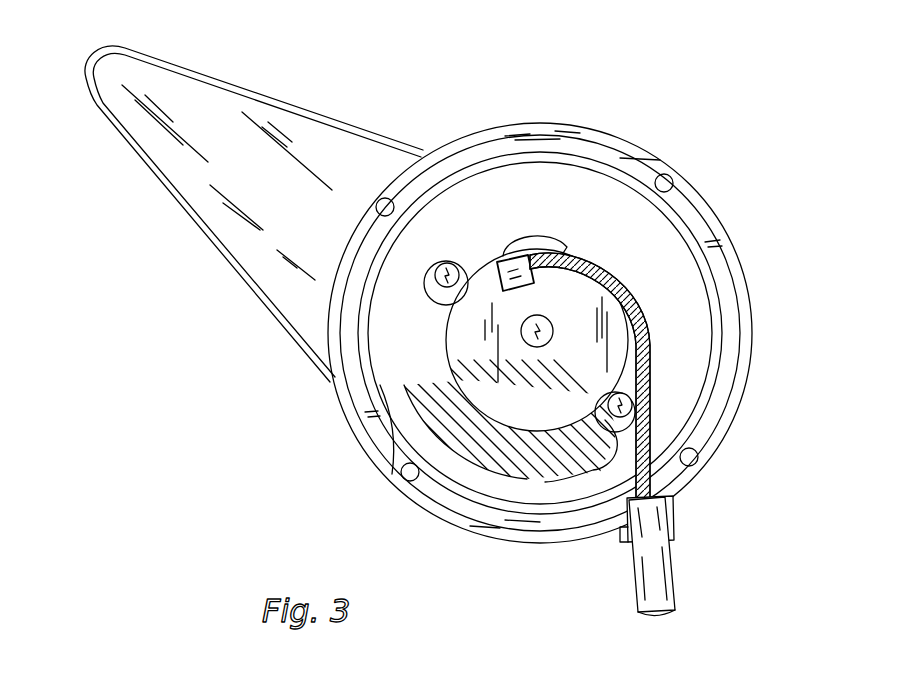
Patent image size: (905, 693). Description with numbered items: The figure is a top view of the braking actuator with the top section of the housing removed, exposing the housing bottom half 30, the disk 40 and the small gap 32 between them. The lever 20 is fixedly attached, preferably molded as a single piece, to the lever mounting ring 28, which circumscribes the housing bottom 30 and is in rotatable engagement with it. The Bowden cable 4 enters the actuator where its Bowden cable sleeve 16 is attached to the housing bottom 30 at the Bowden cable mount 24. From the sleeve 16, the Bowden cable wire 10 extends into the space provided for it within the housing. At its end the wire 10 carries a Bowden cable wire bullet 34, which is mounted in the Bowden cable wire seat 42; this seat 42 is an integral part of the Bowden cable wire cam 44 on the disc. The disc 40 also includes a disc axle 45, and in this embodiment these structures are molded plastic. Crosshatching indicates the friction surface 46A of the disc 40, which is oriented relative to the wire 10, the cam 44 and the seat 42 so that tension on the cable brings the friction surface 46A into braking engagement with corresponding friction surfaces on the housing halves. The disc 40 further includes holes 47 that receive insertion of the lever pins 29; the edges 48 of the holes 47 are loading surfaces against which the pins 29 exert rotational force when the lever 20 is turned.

The Bowden cable 4 is at (685, 580).
The Bowden cable wire 10 is at (643, 403).
The Bowden cable sleeve 16 is at (672, 560).
The lever 20 is at (125, 113).
The Bowden cable mount 24 is at (672, 512).
The lever mounting ring 28 is at (347, 395).
The lever pins 29 is at (437, 273).
The housing bottom half 30 is at (583, 147).
The gap 32 is at (705, 268).
The Bowden cable wire bullet 34 is at (517, 258).
The disk 40 is at (583, 187).
The Bowden cable wire seat 42 is at (498, 262).
The Bowden cable wire cam 44 is at (482, 383).
The disc axle 45 is at (540, 348).
The friction surface 46A is at (548, 464).
The holes 47 is at (593, 468).
The edges 48 is at (637, 373).